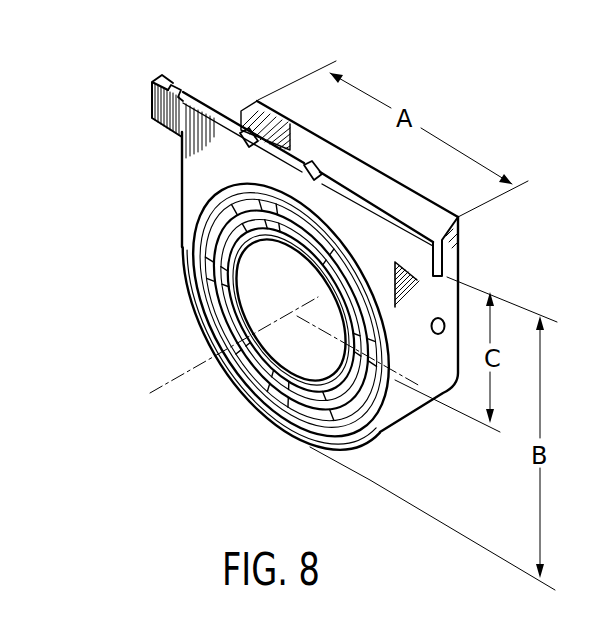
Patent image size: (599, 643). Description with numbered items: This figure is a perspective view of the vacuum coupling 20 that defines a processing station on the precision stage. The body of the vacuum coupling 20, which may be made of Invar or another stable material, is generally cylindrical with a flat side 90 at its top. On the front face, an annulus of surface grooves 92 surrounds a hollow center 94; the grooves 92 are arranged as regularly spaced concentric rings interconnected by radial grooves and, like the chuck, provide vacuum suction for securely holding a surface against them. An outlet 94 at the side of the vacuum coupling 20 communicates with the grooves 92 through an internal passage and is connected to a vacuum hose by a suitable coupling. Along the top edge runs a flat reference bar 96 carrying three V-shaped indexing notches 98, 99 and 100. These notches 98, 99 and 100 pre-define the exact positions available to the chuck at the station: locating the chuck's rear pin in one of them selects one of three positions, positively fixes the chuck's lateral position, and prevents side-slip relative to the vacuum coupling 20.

The vacuum coupling 20 is at (157, 203).
The flat side 90 is at (413, 215).
The surface grooves 92 is at (262, 416).
The hollow center / outlet 94 is at (285, 278).
The flat reference bar 96 is at (210, 96).
The V-shaped indexing notch 98 is at (177, 90).
The V-shaped indexing notch 99 is at (245, 105).
The V-shaped indexing notch 100 is at (318, 170).